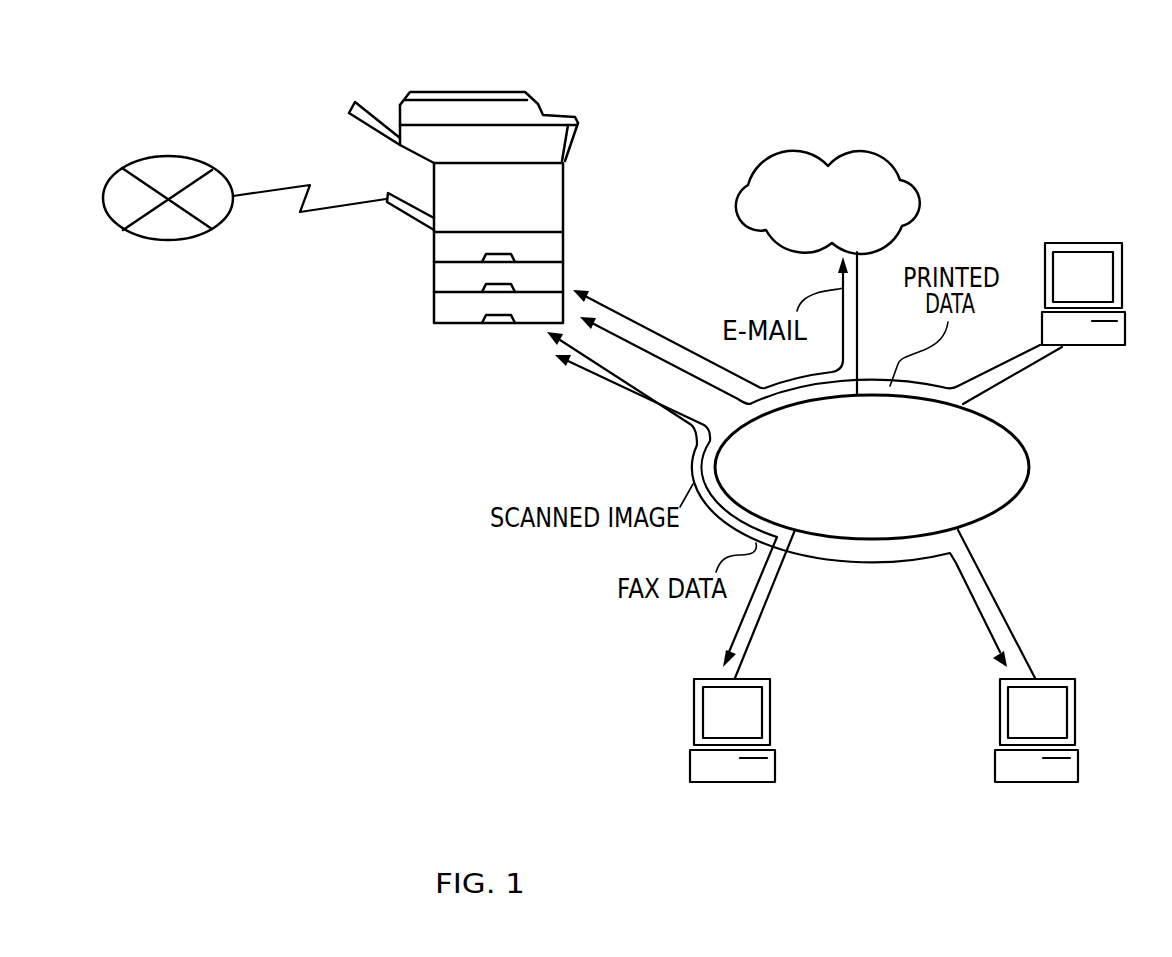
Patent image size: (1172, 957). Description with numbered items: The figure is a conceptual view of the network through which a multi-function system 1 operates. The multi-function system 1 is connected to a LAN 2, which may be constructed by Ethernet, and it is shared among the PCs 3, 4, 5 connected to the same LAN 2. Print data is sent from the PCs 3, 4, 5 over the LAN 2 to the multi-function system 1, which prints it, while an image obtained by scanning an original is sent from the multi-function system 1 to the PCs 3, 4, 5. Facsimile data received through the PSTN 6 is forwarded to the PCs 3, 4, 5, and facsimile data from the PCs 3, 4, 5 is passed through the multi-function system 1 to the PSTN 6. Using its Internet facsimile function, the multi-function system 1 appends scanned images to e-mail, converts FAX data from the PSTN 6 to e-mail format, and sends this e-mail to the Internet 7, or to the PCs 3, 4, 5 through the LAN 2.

The multi-function system 1 is at (545, 62).
The LAN 2 is at (1020, 442).
The PC 3 is at (1125, 326).
The PC 4 is at (1075, 703).
The PC 5 is at (770, 703).
The PSTN 6 is at (163, 240).
The Internet 7 is at (862, 153).